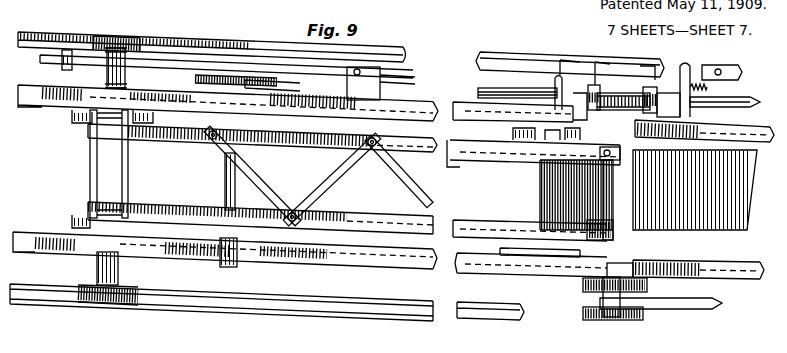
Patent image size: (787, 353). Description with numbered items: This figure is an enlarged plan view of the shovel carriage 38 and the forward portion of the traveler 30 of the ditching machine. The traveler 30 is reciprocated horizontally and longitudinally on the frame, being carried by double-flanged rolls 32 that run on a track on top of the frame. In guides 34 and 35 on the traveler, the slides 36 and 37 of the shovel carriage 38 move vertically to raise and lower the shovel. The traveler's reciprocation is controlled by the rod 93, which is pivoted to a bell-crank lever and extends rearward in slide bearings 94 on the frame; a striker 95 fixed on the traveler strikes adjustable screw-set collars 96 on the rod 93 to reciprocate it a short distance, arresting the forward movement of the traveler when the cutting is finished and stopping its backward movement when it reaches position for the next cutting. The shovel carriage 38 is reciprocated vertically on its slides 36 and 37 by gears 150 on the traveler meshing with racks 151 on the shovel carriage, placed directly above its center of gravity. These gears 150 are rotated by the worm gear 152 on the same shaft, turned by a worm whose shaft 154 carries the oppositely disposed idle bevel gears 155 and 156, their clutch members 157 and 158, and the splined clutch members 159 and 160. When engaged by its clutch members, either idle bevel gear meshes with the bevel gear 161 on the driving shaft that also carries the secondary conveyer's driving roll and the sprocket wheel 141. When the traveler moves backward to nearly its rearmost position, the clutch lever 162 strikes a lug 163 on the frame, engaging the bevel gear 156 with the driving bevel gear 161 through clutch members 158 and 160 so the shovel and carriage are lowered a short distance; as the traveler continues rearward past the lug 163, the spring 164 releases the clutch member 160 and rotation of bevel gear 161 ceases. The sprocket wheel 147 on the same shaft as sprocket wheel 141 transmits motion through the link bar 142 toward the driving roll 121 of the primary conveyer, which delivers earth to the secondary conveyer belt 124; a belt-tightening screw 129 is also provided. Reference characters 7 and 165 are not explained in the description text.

The frame rail 7 is at (480, 54).
The traveler 30 is at (430, 118).
The double-flanged rolls 32 is at (126, 38).
The guides 34 is at (88, 120).
The guides 35 is at (528, 132).
The slides 36 is at (108, 127).
The slides 37 is at (548, 136).
The shovel carriage 38 is at (315, 147).
The rod 93 is at (305, 70).
The slide bearings 94 is at (62, 62).
The striker 95 is at (415, 74).
The adjustable screw-set collars 96 is at (357, 69).
The driving roll 121 is at (608, 207).
The secondary conveyer belt 124 is at (719, 224).
The belt-tightening screw 129 is at (620, 160).
The sprocket wheel 141 is at (598, 321).
The link bar 142 is at (720, 303).
The sprocket wheel 147 is at (592, 291).
The gears 150 is at (270, 127).
The racks 151 is at (280, 80).
The worm gear 152 is at (215, 76).
The shaft 154 is at (500, 97).
The idle bevel gear 155 is at (601, 90).
The idle bevel gear 156 is at (652, 80).
The clutch member 157 is at (576, 95).
The clutch member 158 is at (680, 102).
The splined clutch member 159 is at (555, 80).
The splined clutch member 160 is at (684, 112).
The bevel gear 161 is at (630, 92).
The clutch lever 162 is at (675, 93).
The lug 163 is at (735, 79).
The spring 164 is at (710, 106).
The bar 165 is at (520, 109).